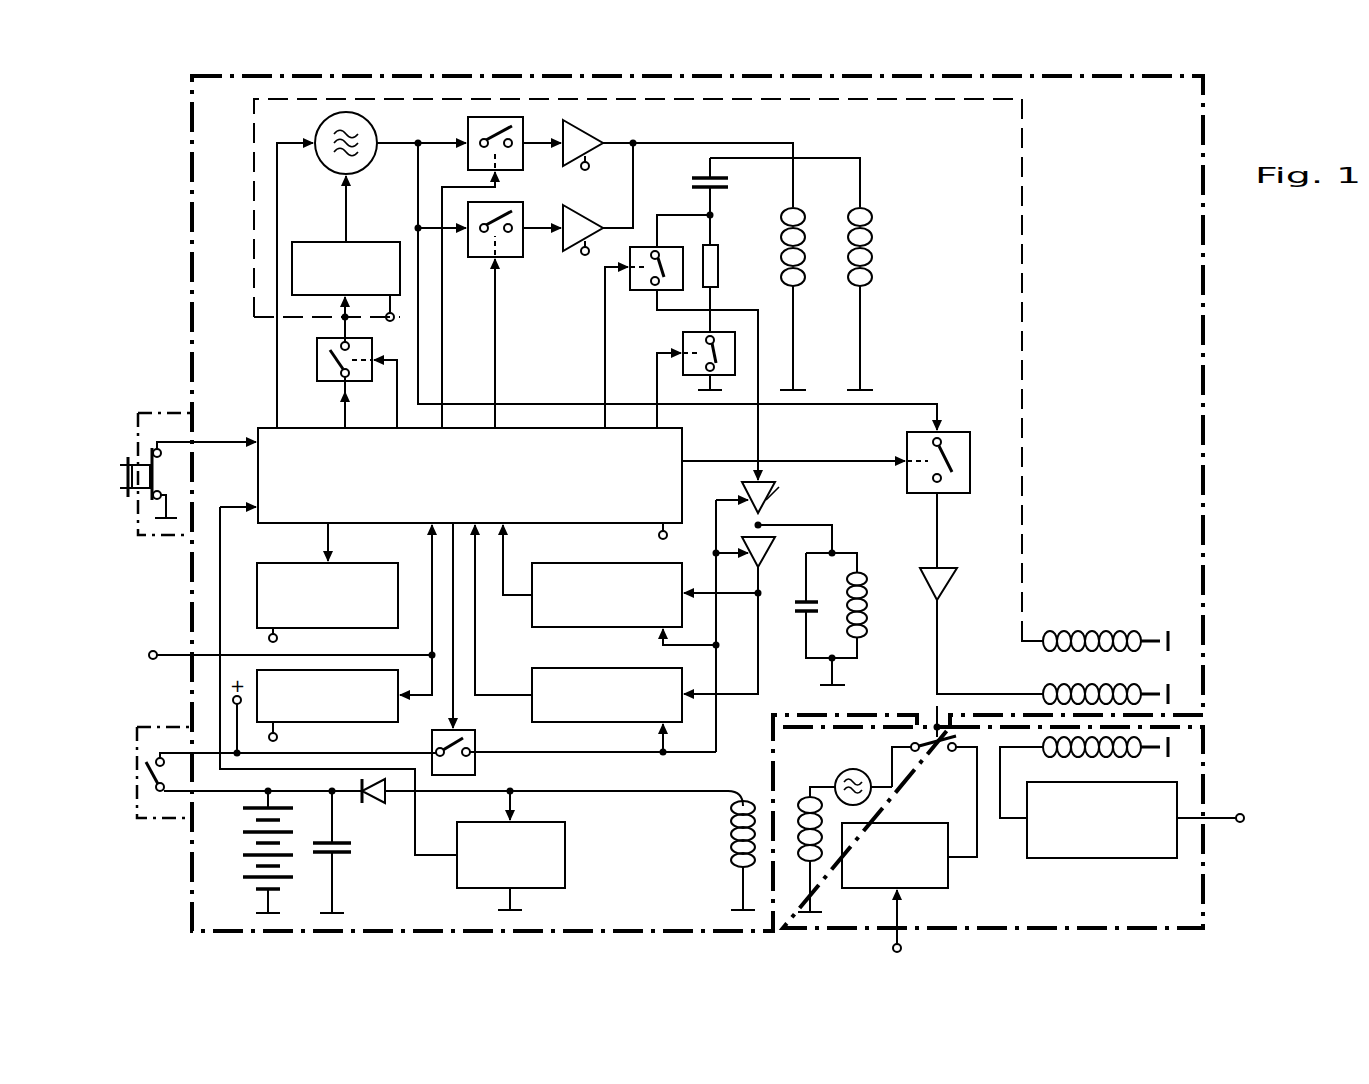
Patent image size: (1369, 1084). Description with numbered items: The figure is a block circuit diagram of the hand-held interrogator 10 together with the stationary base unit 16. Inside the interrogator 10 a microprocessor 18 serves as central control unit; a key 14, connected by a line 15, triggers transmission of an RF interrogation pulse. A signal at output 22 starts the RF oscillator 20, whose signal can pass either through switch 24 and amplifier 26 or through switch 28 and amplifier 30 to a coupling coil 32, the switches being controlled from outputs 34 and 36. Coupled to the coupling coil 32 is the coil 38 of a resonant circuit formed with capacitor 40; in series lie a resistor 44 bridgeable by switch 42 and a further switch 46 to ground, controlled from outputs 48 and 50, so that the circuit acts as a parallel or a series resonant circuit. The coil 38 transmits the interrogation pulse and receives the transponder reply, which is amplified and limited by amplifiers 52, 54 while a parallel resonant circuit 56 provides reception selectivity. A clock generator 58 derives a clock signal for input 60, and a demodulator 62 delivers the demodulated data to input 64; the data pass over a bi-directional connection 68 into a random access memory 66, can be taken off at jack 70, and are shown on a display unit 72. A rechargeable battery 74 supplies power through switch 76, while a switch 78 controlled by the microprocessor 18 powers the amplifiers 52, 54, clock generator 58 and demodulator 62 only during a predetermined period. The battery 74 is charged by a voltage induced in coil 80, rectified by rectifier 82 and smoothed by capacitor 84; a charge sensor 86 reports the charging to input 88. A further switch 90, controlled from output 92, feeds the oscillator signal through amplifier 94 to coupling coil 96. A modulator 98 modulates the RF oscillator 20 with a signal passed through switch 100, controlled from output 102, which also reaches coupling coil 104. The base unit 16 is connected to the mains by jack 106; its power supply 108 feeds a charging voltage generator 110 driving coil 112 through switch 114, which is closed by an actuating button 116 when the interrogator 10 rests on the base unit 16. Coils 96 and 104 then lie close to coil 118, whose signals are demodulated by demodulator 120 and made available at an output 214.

The interrogator 10 is at (1206, 403).
The key 14 is at (128, 468).
The sensor signal line 15 is at (256, 440).
The base unit 16 is at (1206, 888).
The microprocessor 18 is at (318, 446).
The RF oscillator 20 is at (362, 160).
The output 22 is at (274, 428).
The switch 24 is at (468, 125).
The amplifier 26 is at (586, 148).
The switch 28 is at (504, 262).
The amplifier 30 is at (576, 250).
The coupling coil 32 is at (801, 230).
The output 34 is at (444, 420).
The output 36 is at (498, 420).
The coil 38 is at (870, 230).
The capacitor 40 is at (690, 180).
The switch 42 is at (648, 294).
The resistor 44 is at (718, 250).
The switch 46 is at (727, 334).
The output 48 is at (604, 418).
The output 50 is at (654, 416).
The amplifier 52 is at (768, 505).
The amplifier 54 is at (758, 555).
The parallel resonant circuit 56 is at (847, 571).
The clock generator 58 is at (562, 572).
The input 60 is at (506, 528).
The demodulator 62 is at (533, 675).
The input 64 is at (476, 553).
The random access memory 66 is at (398, 710).
The bi-directional connection 68 is at (430, 551).
The jack 70 is at (152, 650).
The display unit 72 is at (266, 573).
The rechargeable battery 74 is at (254, 876).
The switch 76 is at (146, 726).
The switch 78 is at (475, 754).
The coil 80 is at (729, 840).
The rectifier 82 is at (375, 805).
The capacitor 84 is at (351, 848).
The charge sensor 86 is at (565, 836).
The input 88 is at (256, 504).
The further switch 90 is at (959, 444).
The output 92 is at (686, 461).
The amplifier 94 is at (951, 570).
The coupling coil 96 is at (1066, 687).
The modulator 98 is at (318, 245).
The switch 100 is at (300, 360).
The output 102 is at (394, 428).
The coupling coil 104 is at (1083, 636).
The jack 106 is at (903, 948).
The power supply 108 is at (948, 876).
The charging voltage generator 110 is at (840, 770).
The coil 112 is at (816, 868).
The switch 114 is at (930, 754).
The actuating button 116 is at (932, 714).
The coil 118 is at (1120, 764).
The demodulator 120 is at (1074, 843).
The output terminal 214 is at (1244, 822).